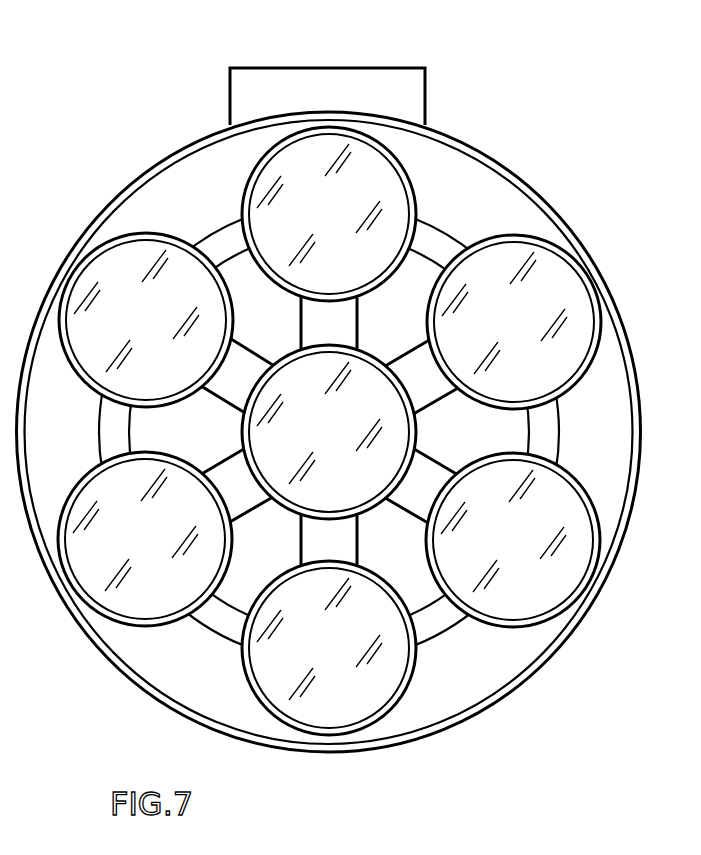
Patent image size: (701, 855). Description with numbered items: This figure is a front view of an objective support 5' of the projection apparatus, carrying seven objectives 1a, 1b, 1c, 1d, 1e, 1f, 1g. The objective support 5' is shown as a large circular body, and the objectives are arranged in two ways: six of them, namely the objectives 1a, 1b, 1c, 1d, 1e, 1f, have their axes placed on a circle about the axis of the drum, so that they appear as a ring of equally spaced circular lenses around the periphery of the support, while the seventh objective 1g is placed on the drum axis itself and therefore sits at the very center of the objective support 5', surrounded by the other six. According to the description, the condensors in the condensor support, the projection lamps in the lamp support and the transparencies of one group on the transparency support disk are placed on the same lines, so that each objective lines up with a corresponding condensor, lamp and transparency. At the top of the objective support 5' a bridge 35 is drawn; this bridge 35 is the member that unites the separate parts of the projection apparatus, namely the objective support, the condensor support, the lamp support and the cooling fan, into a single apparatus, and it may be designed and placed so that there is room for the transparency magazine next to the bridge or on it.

The objective 1a is at (342, 212).
The objective 1b is at (158, 342).
The objective 1c is at (523, 345).
The objective 1d is at (137, 549).
The objective 1e is at (507, 554).
The objective 1f is at (325, 672).
The seventh objective 1g is at (320, 449).
The bridge 35 is at (355, 82).
The objective support 5' is at (329, 432).